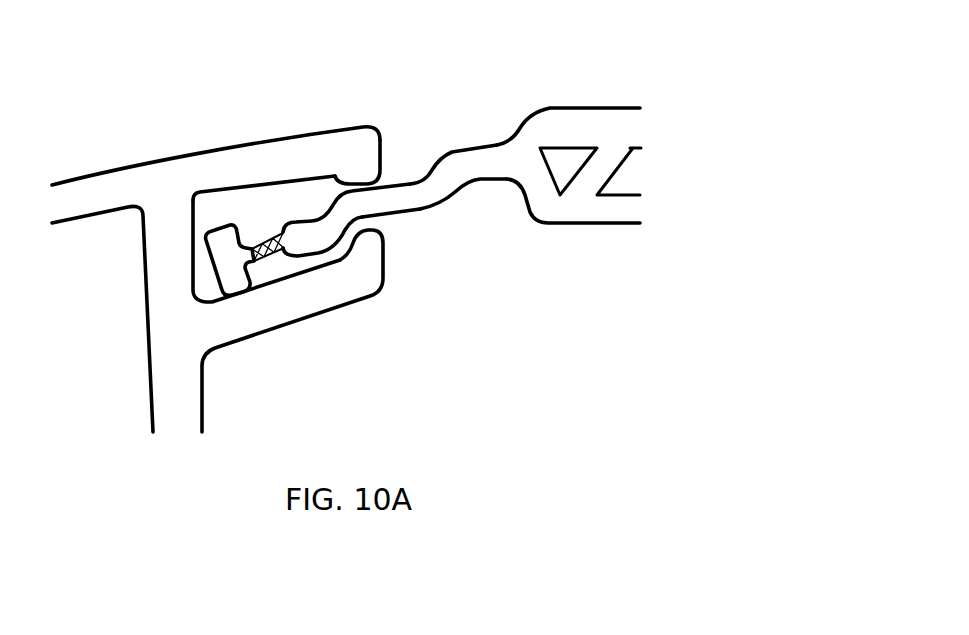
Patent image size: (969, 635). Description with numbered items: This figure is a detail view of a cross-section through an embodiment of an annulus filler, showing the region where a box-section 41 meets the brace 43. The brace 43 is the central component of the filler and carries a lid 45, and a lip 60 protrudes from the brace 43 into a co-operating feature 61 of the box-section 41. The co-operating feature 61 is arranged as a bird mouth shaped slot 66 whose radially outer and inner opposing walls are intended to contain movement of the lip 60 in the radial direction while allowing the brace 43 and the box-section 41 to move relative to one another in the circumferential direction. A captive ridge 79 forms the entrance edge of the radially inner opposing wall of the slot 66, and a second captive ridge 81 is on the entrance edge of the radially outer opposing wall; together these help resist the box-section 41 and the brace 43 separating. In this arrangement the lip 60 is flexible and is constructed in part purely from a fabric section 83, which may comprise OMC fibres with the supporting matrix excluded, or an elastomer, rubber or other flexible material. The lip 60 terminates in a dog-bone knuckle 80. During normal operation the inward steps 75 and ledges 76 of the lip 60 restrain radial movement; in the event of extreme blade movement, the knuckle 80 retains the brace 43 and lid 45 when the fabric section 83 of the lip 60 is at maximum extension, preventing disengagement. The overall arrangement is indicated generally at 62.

The box-section 41 is at (165, 328).
The brace 43 is at (558, 210).
The lid 45 is at (600, 118).
The lip 60 is at (477, 153).
The co-operating feature 61 is at (256, 170).
The connection assembly 62 is at (410, 112).
The slot 66 is at (184, 240).
The inward step 75 is at (440, 166).
The ledge 76 is at (393, 197).
The captive ridge 79 is at (363, 248).
The knuckle 80 is at (222, 230).
The second captive ridge 81 is at (350, 165).
The fabric section 83 is at (262, 238).